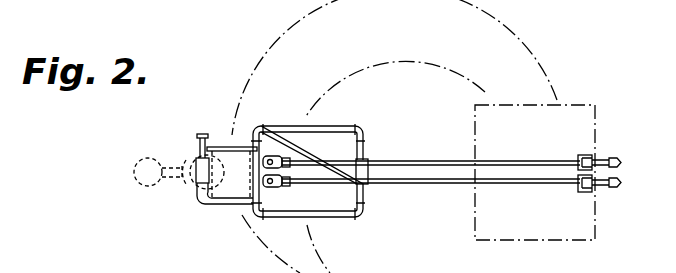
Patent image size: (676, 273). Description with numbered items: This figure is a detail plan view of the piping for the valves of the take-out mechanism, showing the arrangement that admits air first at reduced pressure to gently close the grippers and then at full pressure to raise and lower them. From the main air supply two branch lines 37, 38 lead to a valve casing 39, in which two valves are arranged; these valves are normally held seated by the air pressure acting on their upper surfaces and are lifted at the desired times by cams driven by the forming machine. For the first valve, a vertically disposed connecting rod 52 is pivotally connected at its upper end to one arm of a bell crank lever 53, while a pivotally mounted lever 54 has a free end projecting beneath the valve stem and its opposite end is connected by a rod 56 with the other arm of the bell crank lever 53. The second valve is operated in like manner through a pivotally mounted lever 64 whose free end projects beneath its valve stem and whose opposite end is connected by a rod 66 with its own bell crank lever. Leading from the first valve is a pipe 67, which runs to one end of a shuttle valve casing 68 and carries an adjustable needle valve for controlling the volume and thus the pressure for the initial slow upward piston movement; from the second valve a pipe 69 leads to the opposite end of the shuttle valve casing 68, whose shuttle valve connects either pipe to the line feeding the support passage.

The branch line 37 is at (290, 125).
The branch line 38 is at (292, 219).
The valve casing 39 is at (240, 127).
The connecting rod 52 is at (621, 163).
The bell crank lever 53 is at (606, 158).
The lever 54 is at (276, 158).
The rod 56 is at (436, 153).
The lever 64 is at (276, 186).
The rod 66 is at (430, 185).
The pipe 67 is at (216, 148).
The shuttle valve casing 68 is at (188, 158).
The pipe 69 is at (223, 209).